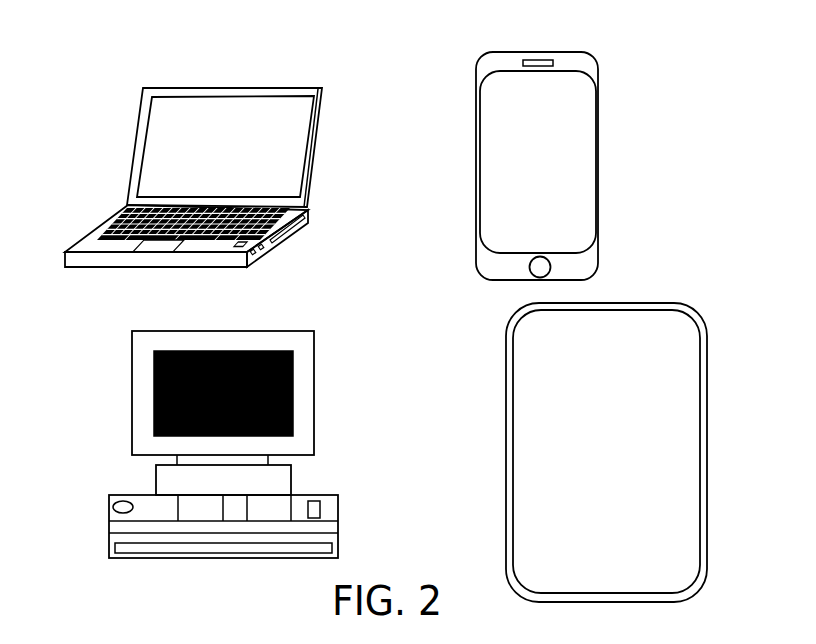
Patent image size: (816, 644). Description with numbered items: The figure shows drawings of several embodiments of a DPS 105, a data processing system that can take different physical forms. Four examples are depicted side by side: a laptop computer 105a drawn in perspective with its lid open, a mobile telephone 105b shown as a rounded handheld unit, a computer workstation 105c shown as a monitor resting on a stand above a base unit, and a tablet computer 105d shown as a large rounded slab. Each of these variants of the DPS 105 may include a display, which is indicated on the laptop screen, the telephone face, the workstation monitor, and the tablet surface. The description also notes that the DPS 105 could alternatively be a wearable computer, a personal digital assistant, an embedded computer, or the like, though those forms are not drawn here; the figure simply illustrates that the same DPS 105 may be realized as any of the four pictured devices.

The DPS 105 is at (80, 72).
The laptop computer 105a is at (278, 87).
The mobile telephone 105b is at (587, 55).
The computer workstation 105c is at (237, 330).
The tablet computer 105d is at (673, 305).